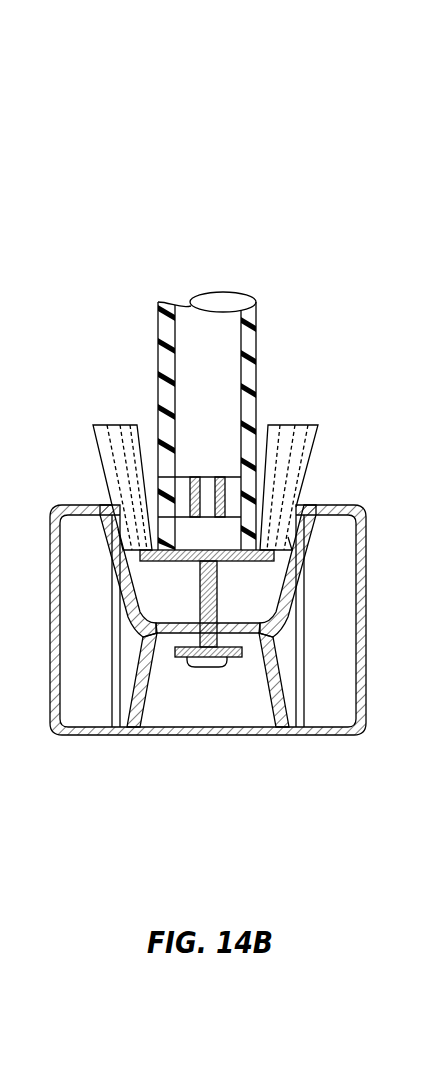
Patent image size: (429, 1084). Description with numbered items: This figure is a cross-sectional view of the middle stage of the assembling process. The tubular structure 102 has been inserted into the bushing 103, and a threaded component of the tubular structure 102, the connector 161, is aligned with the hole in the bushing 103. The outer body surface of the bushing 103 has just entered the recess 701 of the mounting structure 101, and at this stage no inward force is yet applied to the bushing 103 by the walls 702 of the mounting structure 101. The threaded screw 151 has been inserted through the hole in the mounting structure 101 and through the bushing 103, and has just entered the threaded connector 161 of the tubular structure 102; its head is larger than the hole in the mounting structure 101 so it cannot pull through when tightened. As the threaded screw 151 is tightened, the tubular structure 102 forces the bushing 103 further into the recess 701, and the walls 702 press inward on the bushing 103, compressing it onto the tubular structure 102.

The mounting structure 101 is at (313, 612).
The tubular structure 102 is at (258, 364).
The bushing 103 is at (327, 446).
The connector 161 is at (263, 424).
The recess 701 is at (298, 505).
The walls 702 is at (121, 503).
The threaded screw 151 is at (205, 667).